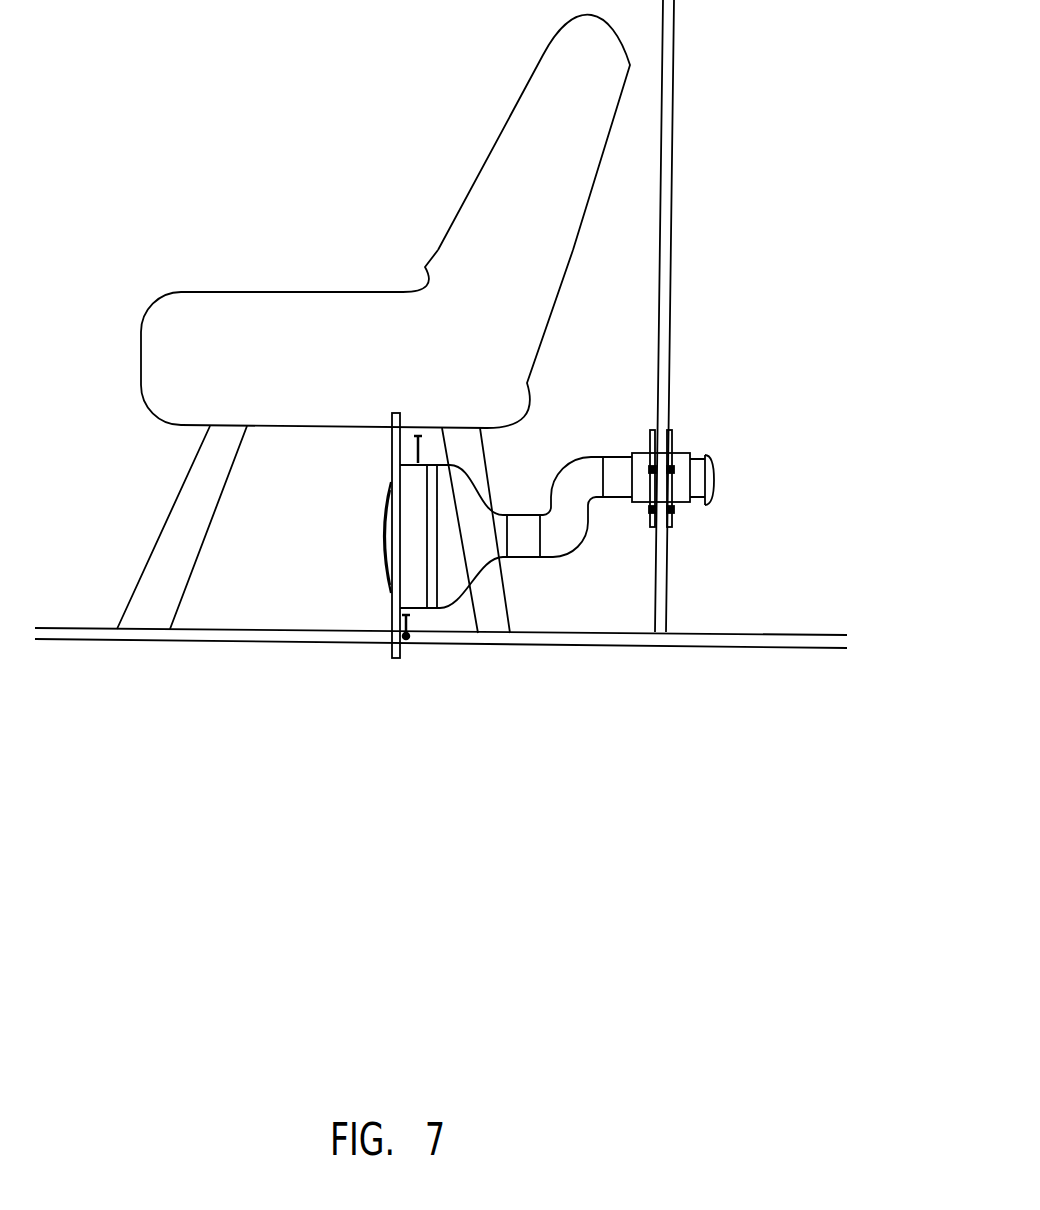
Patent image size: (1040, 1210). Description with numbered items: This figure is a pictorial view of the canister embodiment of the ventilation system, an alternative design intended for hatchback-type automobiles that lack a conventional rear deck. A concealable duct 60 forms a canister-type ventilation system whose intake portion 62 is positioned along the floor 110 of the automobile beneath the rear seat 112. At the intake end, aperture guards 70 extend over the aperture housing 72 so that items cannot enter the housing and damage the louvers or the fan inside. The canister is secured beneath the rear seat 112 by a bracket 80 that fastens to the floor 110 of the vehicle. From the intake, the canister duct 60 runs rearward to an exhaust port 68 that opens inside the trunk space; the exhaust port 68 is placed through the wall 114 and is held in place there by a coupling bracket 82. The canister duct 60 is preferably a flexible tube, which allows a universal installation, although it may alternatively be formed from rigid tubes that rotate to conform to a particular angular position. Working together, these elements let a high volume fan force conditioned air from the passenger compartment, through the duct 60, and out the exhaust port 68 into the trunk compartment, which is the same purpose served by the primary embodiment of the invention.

The concealable duct 60 is at (562, 570).
The intake portion 62 is at (353, 582).
The exhaust port 68 is at (717, 483).
The aperture guards 70 is at (370, 535).
The aperture housing 72 is at (428, 608).
The bracket 80 is at (378, 660).
The coupling bracket 82 is at (673, 527).
The floor 110 is at (208, 635).
The rear seat 112 is at (604, 170).
The wall 114 is at (667, 310).